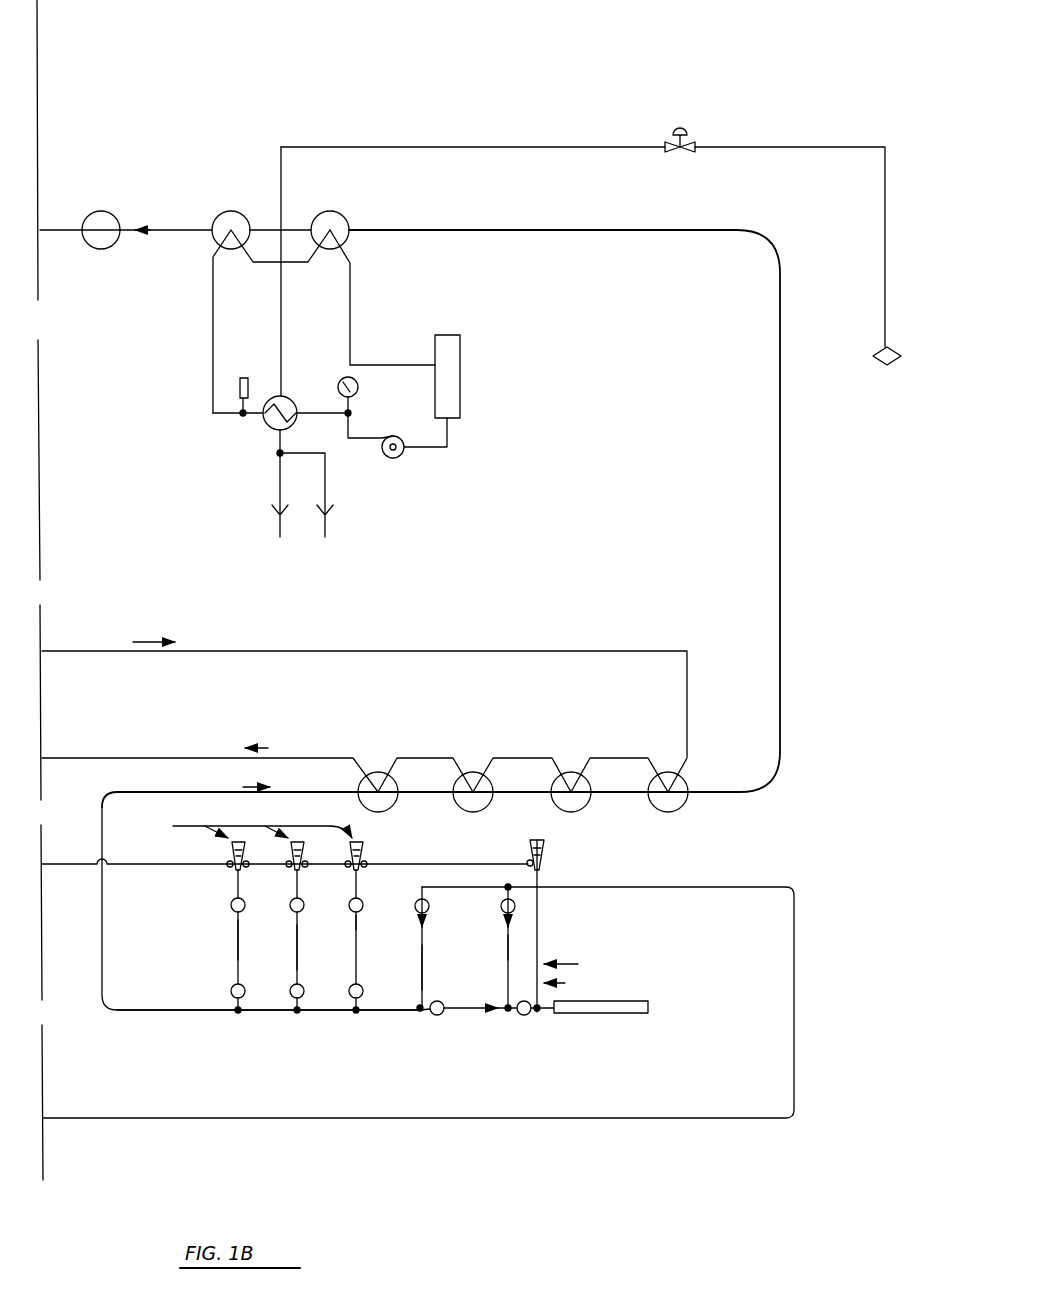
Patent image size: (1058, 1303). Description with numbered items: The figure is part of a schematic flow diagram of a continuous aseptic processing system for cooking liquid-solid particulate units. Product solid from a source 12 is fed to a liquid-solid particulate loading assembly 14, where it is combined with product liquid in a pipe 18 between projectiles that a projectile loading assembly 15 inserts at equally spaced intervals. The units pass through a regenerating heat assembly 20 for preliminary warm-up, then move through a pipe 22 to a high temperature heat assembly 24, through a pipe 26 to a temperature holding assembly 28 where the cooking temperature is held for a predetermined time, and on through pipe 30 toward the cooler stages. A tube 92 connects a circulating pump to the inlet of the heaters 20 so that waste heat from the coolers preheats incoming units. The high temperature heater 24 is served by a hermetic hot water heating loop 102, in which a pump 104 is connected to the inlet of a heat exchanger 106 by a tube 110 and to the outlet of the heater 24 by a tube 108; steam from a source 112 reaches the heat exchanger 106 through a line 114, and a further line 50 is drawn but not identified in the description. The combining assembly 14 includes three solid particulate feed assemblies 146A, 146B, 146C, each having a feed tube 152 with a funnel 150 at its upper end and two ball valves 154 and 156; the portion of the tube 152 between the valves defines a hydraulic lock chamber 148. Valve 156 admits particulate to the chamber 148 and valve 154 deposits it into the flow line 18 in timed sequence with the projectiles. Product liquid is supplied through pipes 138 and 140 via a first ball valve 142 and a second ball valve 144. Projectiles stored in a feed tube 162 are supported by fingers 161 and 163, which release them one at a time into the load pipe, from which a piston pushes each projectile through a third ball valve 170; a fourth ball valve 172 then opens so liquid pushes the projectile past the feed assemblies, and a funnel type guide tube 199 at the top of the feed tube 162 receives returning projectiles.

The product solid source 12 is at (190, 818).
The liquid-solid particulate loading assembly 14 is at (309, 1037).
The projectile loading assembly 15 is at (539, 1022).
The pipe 18 is at (102, 812).
The regenerating heat assembly 20 is at (572, 762).
The pipe 22 is at (516, 230).
The high temperature heat assembly 24 is at (355, 217).
The pipe 26 is at (166, 235).
The temperature holding assembly 28 is at (104, 254).
The pipe 30 is at (69, 233).
The line 50 is at (282, 318).
The tube 92 is at (405, 652).
The hermetic hot water heating loop 102 is at (247, 434).
The pump 104 is at (401, 457).
The heat exchanger 106 is at (289, 398).
The tube 108 is at (351, 270).
The tube 110 is at (212, 290).
The steam source 112 is at (896, 351).
The steam line 114 is at (442, 118).
The first product liquid supply line 138 is at (506, 945).
The second process liquid supply line 140 is at (424, 966).
The first ball valve 142 is at (502, 909).
The second ball valve 144 is at (427, 910).
The solid particulate feed assembly 146A is at (374, 921).
The solid particulate feed assembly 146B is at (305, 965).
The solid particulate feed assembly 146C is at (243, 958).
The hydraulic lock chamber 148 is at (235, 978).
The funnel 150 is at (230, 853).
The feed tube 152 is at (235, 884).
The ball valve 154 is at (231, 992).
The ball valve 156 is at (231, 908).
The upper finger 161 is at (566, 964).
The feed tube 162 is at (540, 916).
The lower finger 163 is at (567, 987).
The third ball valve 170 is at (520, 1015).
The fourth ball valve 172 is at (432, 1015).
The funnel type guide tube 199 is at (545, 843).